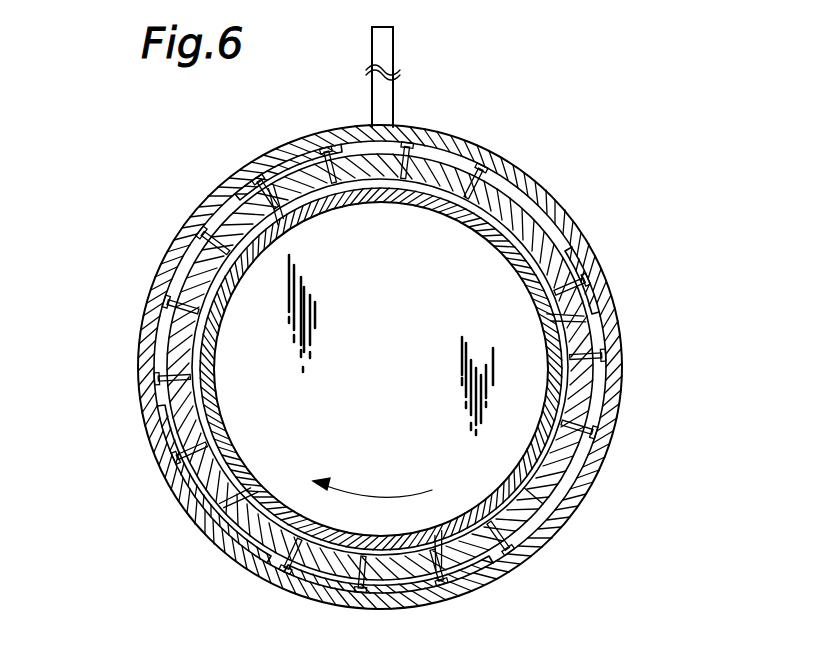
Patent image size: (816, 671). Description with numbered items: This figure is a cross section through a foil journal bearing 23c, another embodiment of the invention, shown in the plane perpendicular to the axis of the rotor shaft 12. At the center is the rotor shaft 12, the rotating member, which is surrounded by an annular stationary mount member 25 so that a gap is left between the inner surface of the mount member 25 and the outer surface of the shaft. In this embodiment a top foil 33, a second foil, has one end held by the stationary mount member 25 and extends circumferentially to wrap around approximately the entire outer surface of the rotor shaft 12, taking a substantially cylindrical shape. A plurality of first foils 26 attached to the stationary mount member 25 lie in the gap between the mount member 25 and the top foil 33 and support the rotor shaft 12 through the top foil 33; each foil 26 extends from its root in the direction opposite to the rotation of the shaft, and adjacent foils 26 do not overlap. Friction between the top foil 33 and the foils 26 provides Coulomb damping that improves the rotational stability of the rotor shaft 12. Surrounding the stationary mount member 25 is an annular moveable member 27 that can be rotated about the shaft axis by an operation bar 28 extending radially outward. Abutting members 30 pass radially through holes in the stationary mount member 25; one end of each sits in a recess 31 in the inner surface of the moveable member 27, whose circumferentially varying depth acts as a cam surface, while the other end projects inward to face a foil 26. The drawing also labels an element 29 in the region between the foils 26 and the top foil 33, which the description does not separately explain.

The rotor shaft 12 is at (396, 402).
The journal bearing 23c is at (523, 82).
The stationary mount member 25 is at (607, 372).
The foils 26 is at (552, 230).
The moveable member 27 is at (566, 525).
The operation bar 28 is at (386, 48).
The spring straps 29 is at (240, 195).
The abutting members 30 is at (326, 150).
The recesses 31 is at (186, 233).
The top foil 33 is at (168, 357).